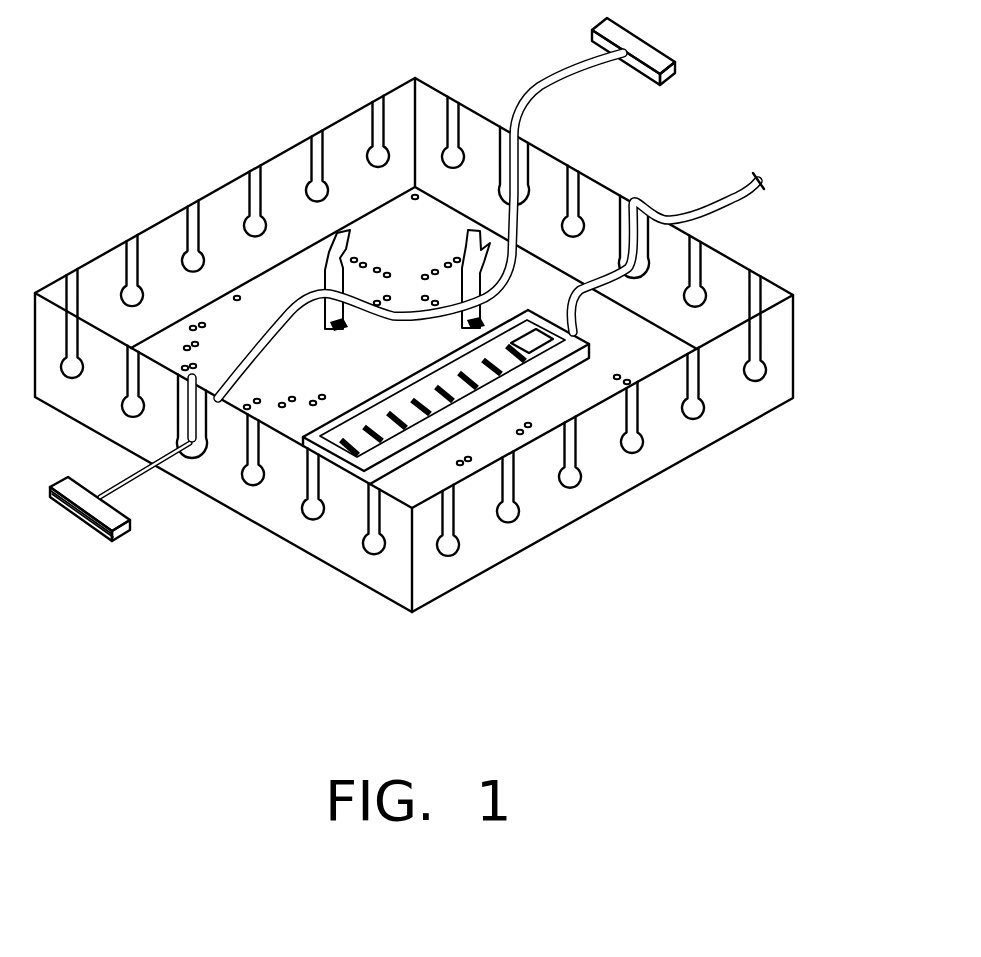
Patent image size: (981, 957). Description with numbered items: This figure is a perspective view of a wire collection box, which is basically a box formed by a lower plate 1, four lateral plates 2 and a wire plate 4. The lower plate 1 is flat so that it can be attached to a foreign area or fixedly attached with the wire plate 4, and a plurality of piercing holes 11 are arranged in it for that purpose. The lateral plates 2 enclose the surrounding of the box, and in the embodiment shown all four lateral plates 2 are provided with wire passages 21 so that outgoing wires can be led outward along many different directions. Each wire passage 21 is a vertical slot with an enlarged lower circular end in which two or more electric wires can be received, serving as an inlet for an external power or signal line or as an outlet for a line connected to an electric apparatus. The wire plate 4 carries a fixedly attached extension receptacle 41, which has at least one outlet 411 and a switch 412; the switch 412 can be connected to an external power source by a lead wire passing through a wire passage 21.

The lower plate 1 is at (364, 590).
The piercing holes 11 is at (419, 193).
The lateral plates 2 is at (780, 334).
The wire passage 21 is at (701, 405).
The wire plate 4 is at (447, 220).
The extension receptacle 41 is at (509, 364).
The outlet 411 is at (507, 366).
The switch 412 is at (531, 318).